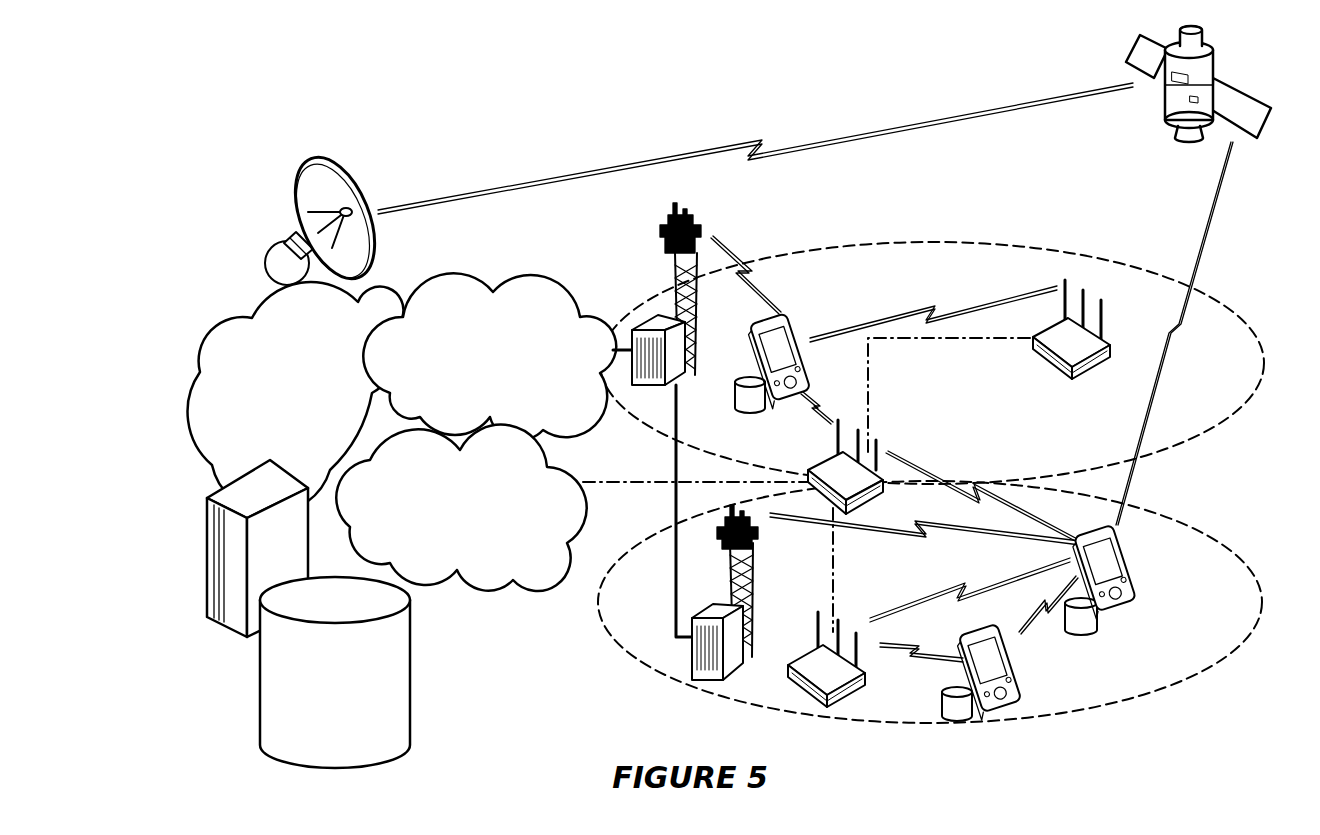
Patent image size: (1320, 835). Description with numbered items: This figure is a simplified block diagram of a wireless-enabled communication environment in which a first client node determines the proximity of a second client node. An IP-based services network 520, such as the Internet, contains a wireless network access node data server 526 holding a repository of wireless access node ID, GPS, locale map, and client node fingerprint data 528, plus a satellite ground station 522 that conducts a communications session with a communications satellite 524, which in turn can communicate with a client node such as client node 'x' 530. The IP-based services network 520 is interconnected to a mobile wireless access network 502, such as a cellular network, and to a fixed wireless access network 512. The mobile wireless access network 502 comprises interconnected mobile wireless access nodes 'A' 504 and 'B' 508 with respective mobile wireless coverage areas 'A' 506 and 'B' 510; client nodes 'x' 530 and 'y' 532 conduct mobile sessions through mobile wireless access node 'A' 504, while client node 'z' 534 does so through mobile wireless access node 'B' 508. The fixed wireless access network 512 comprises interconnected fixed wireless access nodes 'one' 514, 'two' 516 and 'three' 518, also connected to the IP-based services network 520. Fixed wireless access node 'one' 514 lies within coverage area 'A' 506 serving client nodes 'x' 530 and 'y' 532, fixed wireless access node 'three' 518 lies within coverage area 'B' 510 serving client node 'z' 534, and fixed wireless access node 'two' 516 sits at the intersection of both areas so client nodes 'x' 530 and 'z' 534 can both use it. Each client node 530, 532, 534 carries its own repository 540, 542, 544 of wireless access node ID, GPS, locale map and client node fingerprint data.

The mobile wireless access network 502 is at (489, 356).
The mobile wireless access node 'A' 504 is at (694, 660).
The mobile wireless coverage area 'A' 506 is at (1064, 716).
The mobile wireless access node 'B' 508 is at (652, 316).
The mobile wireless coverage area 'B' 510 is at (938, 243).
The fixed wireless access network 512 is at (461, 508).
The fixed wireless access node '1' 514 is at (870, 706).
The fixed wireless access node '2' 516 is at (888, 470).
The fixed wireless access node '3' 518 is at (1067, 370).
The IP-based services network 520 is at (296, 397).
The satellite ground station 522 is at (292, 207).
The communications satellite 524 is at (1140, 40).
The wireless network access node data server 526 is at (207, 600).
The repository of wireless access node ID, GPS, locale map, and client node fingerpr 528 is at (335, 672).
The client node 'x' 530 is at (1135, 549).
The client node 'y' 532 is at (1013, 650).
The client node 'z' 534 is at (802, 330).
The repository of client node 'x' 540 is at (1098, 625).
The repository of client node 'y' 542 is at (942, 700).
The repository of client node 'z' 544 is at (735, 395).